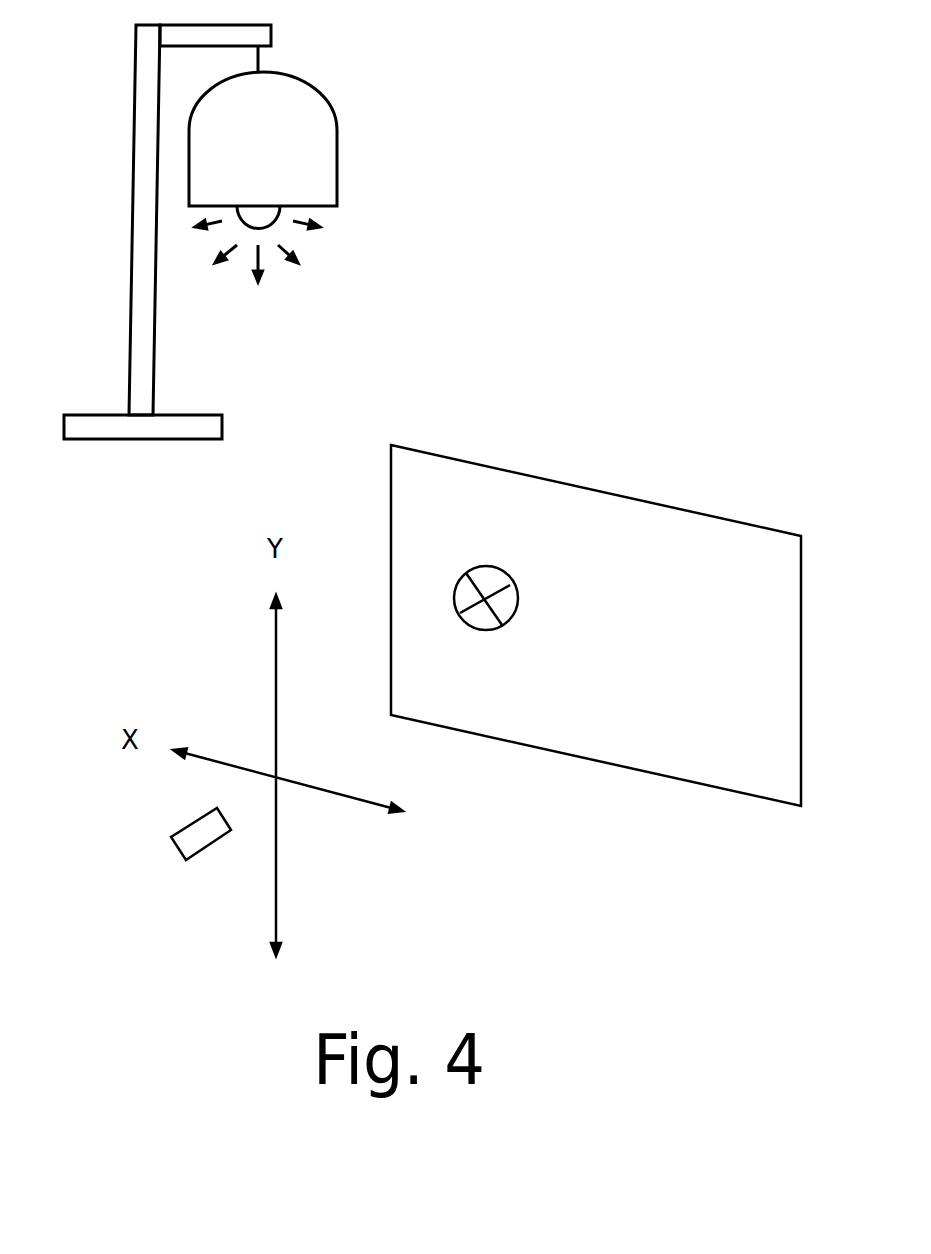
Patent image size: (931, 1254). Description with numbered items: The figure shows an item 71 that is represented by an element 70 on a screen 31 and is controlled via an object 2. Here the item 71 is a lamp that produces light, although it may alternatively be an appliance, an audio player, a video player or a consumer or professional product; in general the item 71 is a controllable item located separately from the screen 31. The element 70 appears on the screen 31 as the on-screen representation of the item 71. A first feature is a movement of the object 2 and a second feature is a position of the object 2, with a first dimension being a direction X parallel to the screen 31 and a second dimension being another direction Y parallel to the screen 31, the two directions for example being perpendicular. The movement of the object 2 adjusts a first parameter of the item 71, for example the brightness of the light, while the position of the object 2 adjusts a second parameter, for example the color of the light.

The item 71 is at (225, 232).
The element 70 is at (486, 618).
The screen 31 is at (769, 797).
The object 2 is at (205, 850).